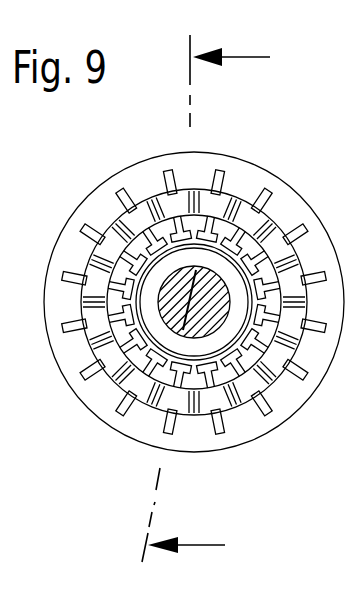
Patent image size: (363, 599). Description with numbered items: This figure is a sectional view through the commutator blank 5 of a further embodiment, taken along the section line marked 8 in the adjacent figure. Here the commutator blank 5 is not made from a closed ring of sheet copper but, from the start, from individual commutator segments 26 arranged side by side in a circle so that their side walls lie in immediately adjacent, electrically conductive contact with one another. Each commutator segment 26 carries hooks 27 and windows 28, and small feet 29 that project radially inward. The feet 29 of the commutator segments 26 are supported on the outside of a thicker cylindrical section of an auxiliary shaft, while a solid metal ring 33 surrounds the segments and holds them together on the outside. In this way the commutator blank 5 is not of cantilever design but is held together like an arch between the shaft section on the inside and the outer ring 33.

The commutator blank 5 is at (292, 210).
The section line 8- 8 is at (194, 301).
The commutator segments 26 is at (202, 176).
The hooks 27 is at (117, 197).
The windows 28 is at (100, 393).
The feet 29 is at (158, 410).
The ring 33 is at (238, 433).